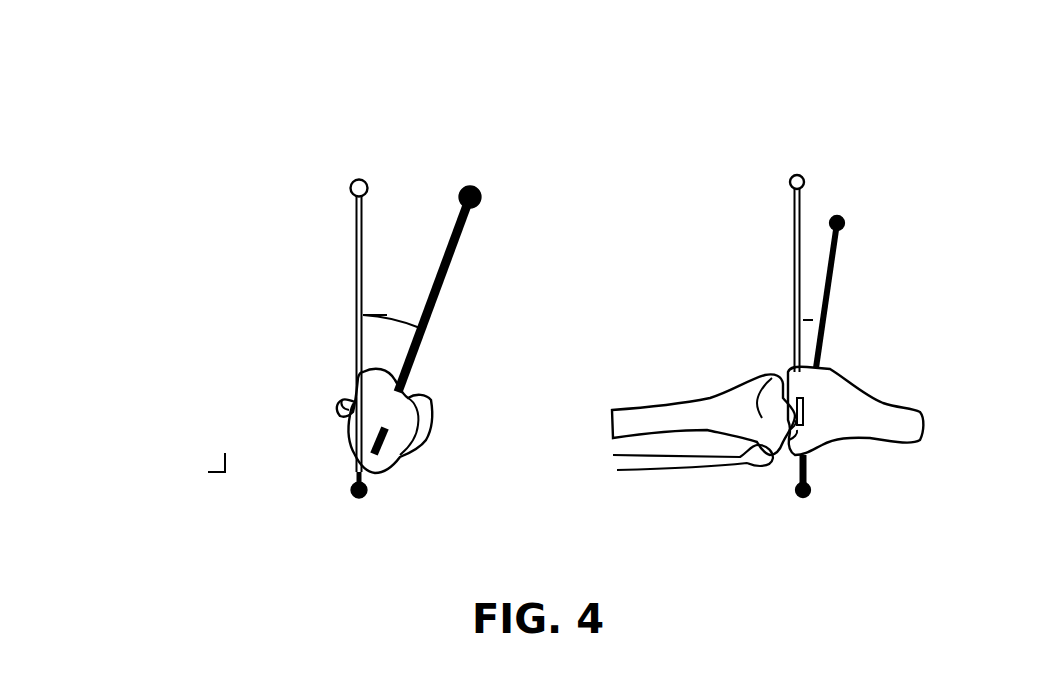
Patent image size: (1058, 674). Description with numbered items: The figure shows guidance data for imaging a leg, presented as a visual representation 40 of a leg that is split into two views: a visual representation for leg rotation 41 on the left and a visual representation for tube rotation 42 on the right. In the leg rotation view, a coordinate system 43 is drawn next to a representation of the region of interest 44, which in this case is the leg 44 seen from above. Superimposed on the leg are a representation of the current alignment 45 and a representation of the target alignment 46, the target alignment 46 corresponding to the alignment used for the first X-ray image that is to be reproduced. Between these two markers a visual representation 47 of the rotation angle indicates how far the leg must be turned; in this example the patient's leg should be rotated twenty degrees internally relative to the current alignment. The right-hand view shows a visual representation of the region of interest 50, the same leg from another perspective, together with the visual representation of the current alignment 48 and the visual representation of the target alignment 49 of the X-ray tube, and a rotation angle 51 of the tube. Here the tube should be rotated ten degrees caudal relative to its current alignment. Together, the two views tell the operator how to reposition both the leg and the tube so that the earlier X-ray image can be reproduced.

The visual representation of a leg 40 is at (143, 81).
The visual representation for leg rotation 41 is at (342, 119).
The side view of knee joint 42 is at (766, 160).
The coordinate system 43 is at (213, 451).
The representation of the region of interest 44 is at (456, 447).
The representation of the current alignment 45 is at (378, 222).
The representation of the target alignment 46 is at (466, 264).
The visual representation of the rotation angle 47 is at (376, 328).
The visual representation of the current alignment 48 is at (793, 257).
The visual representation of the target alignment 49 is at (855, 236).
The visual representation of the region of interest 50 is at (844, 452).
The rotation angle of the tube 51 is at (824, 321).